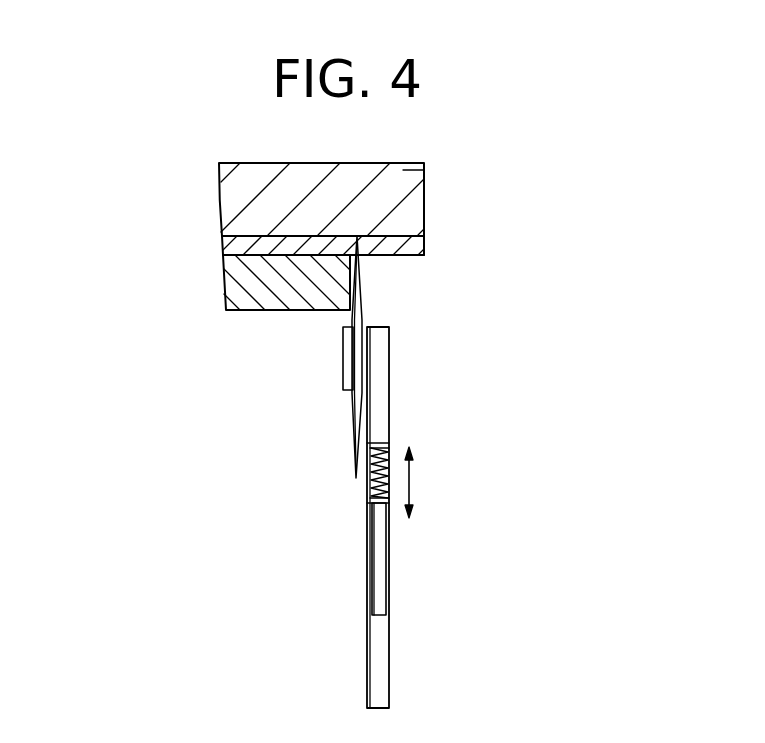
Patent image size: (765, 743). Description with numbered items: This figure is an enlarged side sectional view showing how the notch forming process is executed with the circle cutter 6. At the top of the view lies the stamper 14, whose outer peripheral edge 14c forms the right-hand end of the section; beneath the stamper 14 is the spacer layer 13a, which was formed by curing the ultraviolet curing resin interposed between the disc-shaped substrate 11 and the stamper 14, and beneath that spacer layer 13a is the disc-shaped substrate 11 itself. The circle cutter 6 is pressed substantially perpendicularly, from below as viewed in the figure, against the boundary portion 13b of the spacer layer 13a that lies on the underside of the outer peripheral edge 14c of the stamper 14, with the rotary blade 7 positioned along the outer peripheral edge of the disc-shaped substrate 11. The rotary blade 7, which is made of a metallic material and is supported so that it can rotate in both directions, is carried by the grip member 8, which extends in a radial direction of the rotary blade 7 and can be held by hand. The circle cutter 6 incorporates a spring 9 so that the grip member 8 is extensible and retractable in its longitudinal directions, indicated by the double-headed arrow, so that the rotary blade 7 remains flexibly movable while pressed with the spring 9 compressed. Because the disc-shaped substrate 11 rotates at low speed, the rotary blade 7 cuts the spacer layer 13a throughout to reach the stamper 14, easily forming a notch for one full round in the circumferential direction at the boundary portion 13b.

The circle cutter 6 is at (391, 657).
The rotary blade 7 is at (363, 302).
The grip member 8 is at (375, 630).
The spring 9 is at (368, 487).
The disc-shaped substrate 11 is at (223, 287).
The spacer layer 13a is at (222, 250).
The boundary portion 13b is at (382, 256).
The stamper 14 is at (218, 209).
The outer peripheral edge 14c is at (403, 205).